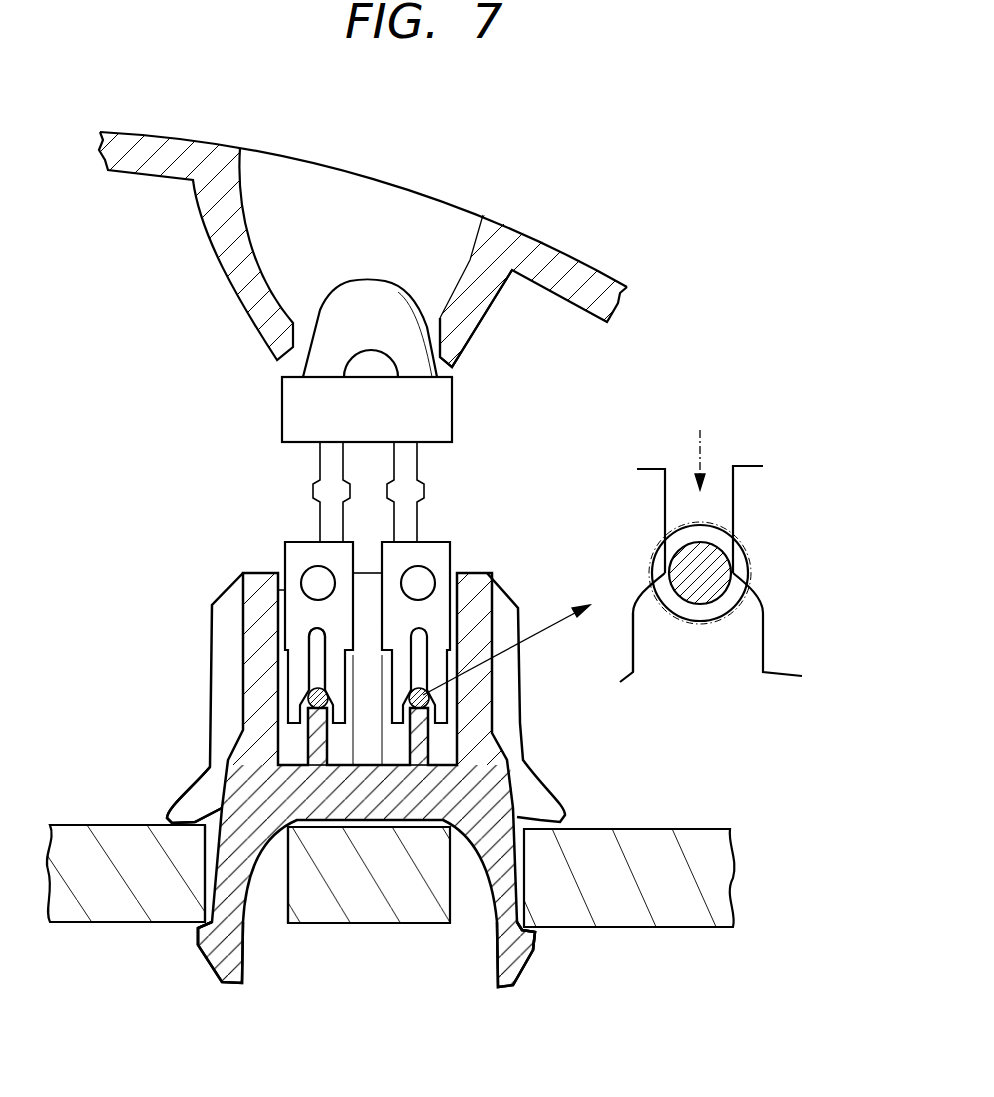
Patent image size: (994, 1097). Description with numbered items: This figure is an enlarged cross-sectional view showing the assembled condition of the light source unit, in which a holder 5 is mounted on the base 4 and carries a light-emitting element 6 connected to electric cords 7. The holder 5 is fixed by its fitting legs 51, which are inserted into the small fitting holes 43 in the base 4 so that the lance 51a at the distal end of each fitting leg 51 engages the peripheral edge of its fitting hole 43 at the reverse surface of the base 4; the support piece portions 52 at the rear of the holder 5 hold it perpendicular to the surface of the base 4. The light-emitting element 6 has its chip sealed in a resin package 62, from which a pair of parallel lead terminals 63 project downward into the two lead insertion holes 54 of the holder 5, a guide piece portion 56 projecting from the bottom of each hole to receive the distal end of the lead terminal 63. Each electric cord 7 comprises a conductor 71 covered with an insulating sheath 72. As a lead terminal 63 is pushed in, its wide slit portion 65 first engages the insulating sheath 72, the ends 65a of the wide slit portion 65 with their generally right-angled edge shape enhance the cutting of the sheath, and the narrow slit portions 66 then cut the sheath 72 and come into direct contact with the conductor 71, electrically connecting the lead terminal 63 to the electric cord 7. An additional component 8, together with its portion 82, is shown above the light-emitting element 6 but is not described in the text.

The base 4 is at (92, 830).
The holder 5 is at (243, 622).
The light-emitting element 6 is at (467, 470).
The electric cord 7 is at (307, 693).
The lens cover 8 is at (568, 260).
The small fitting hole 43 is at (277, 910).
The fitting leg 51 is at (222, 986).
The lance 51a is at (196, 928).
The support piece portion 52 is at (195, 796).
The lead insertion hole 54 is at (278, 574).
The guide piece portion 56 is at (430, 739).
The resin package 62 is at (443, 410).
The lead terminal 63 is at (448, 543).
The wide slit portion 65 is at (303, 713).
The end of wide slit portion 65a is at (745, 563).
The narrow slit portion 66 is at (315, 652).
The conductor 71 is at (700, 584).
The insulating sheath 72 is at (735, 614).
The cover arm 82 is at (473, 247).